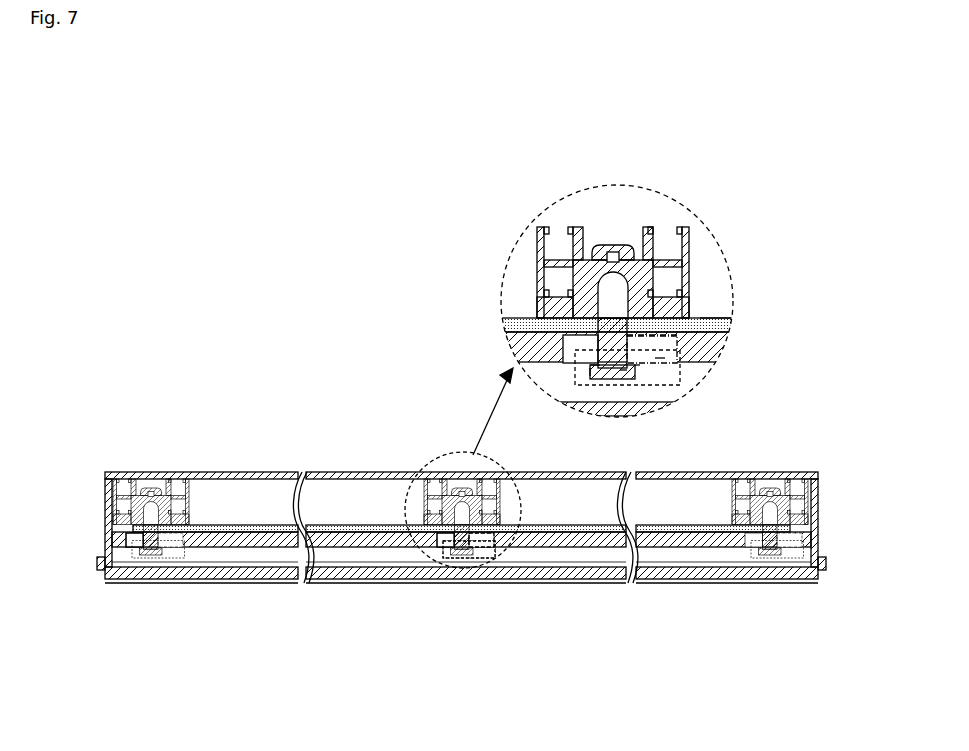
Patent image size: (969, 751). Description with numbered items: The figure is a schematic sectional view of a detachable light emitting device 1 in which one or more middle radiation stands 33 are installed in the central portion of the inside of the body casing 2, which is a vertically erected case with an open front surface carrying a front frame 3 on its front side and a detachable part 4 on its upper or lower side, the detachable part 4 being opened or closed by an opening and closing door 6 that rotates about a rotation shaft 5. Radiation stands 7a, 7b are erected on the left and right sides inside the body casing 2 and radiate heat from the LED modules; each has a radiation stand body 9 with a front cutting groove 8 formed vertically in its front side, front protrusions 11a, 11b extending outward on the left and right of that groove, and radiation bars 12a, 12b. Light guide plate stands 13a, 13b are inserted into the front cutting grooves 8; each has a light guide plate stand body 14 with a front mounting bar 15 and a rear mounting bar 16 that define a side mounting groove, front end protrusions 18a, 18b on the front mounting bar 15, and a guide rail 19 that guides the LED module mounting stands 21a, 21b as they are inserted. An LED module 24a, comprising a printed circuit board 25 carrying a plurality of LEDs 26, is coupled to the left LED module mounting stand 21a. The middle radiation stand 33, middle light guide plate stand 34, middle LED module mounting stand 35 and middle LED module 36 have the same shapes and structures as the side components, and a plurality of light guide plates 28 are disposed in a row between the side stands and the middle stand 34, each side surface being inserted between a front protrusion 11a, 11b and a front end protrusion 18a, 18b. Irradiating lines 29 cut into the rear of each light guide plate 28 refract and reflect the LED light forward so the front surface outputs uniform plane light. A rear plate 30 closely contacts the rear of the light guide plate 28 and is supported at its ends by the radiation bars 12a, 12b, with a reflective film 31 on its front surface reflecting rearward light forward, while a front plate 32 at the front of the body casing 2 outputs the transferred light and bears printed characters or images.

The detachable light emitting device 1 is at (300, 462).
The body casing 2 is at (345, 472).
The front frame 3 is at (370, 585).
The detachable part 4 is at (470, 560).
The rotation shaft 5 is at (500, 558).
The opening and closing door 6 is at (512, 560).
The radiation stand 7a is at (148, 488).
The radiation stand 7b is at (775, 488).
The front cutting groove 8 is at (612, 300).
The radiation stand body 9 is at (615, 247).
The front protrusion 11a is at (536, 318).
The front protrusion 11b is at (693, 312).
The radiation bar 12a is at (537, 238).
The radiation bar 12b is at (690, 238).
The light guide plate stand 13a is at (100, 570).
The light guide plate stand 13b is at (820, 572).
The light guide plate stand body 14 is at (565, 340).
The front mounting bar 15 is at (622, 376).
The rear mounting bar 16 is at (585, 300).
The front end protrusion 18a is at (592, 376).
The front end protrusion 18b is at (660, 360).
The guide rail 19 is at (447, 556).
The LED module mounting stand 21a is at (154, 558).
The LED module mounting stand 21b is at (765, 565).
The LED module 24a is at (188, 556).
The printed circuit board 25 is at (641, 368).
The LED 26 is at (668, 372).
The light guide plate 28 is at (720, 348).
The irradiating line 29 is at (722, 316).
The rear plate 30 is at (278, 532).
The reflective film 31 is at (238, 524).
The front plate 32 is at (318, 565).
The middle radiation stand 33 is at (602, 248).
The middle light guide plate stand 34 is at (578, 365).
The middle LED module mounting stand 35 is at (607, 384).
The middle LED module 36 is at (634, 345).